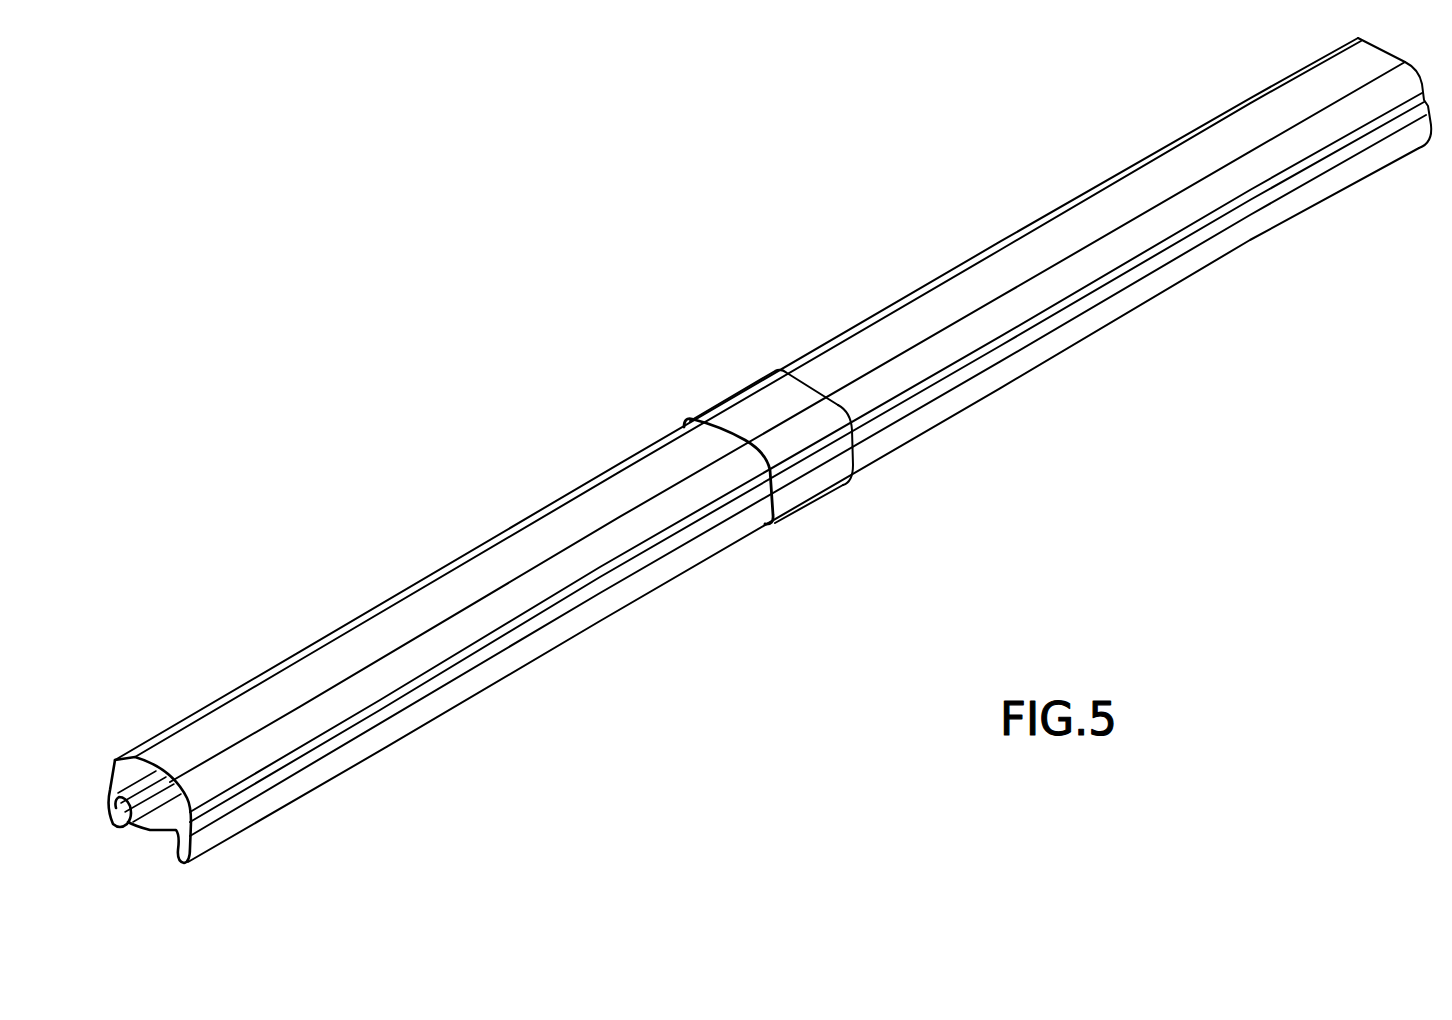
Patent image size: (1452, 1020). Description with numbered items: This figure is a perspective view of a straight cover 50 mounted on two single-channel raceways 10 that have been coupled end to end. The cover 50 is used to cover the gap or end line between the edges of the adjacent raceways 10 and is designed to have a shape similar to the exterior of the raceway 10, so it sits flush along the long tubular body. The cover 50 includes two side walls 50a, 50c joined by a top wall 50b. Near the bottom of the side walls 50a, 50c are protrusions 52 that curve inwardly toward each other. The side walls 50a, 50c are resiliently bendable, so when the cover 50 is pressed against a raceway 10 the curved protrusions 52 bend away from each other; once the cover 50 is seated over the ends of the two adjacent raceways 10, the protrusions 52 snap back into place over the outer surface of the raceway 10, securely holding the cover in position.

The raceway 10 is at (1012, 208).
The cover 50 is at (762, 414).
The side wall 50a is at (690, 418).
The top wall 50b is at (767, 392).
The side wall 50c is at (818, 427).
The protrusion 52 is at (801, 497).